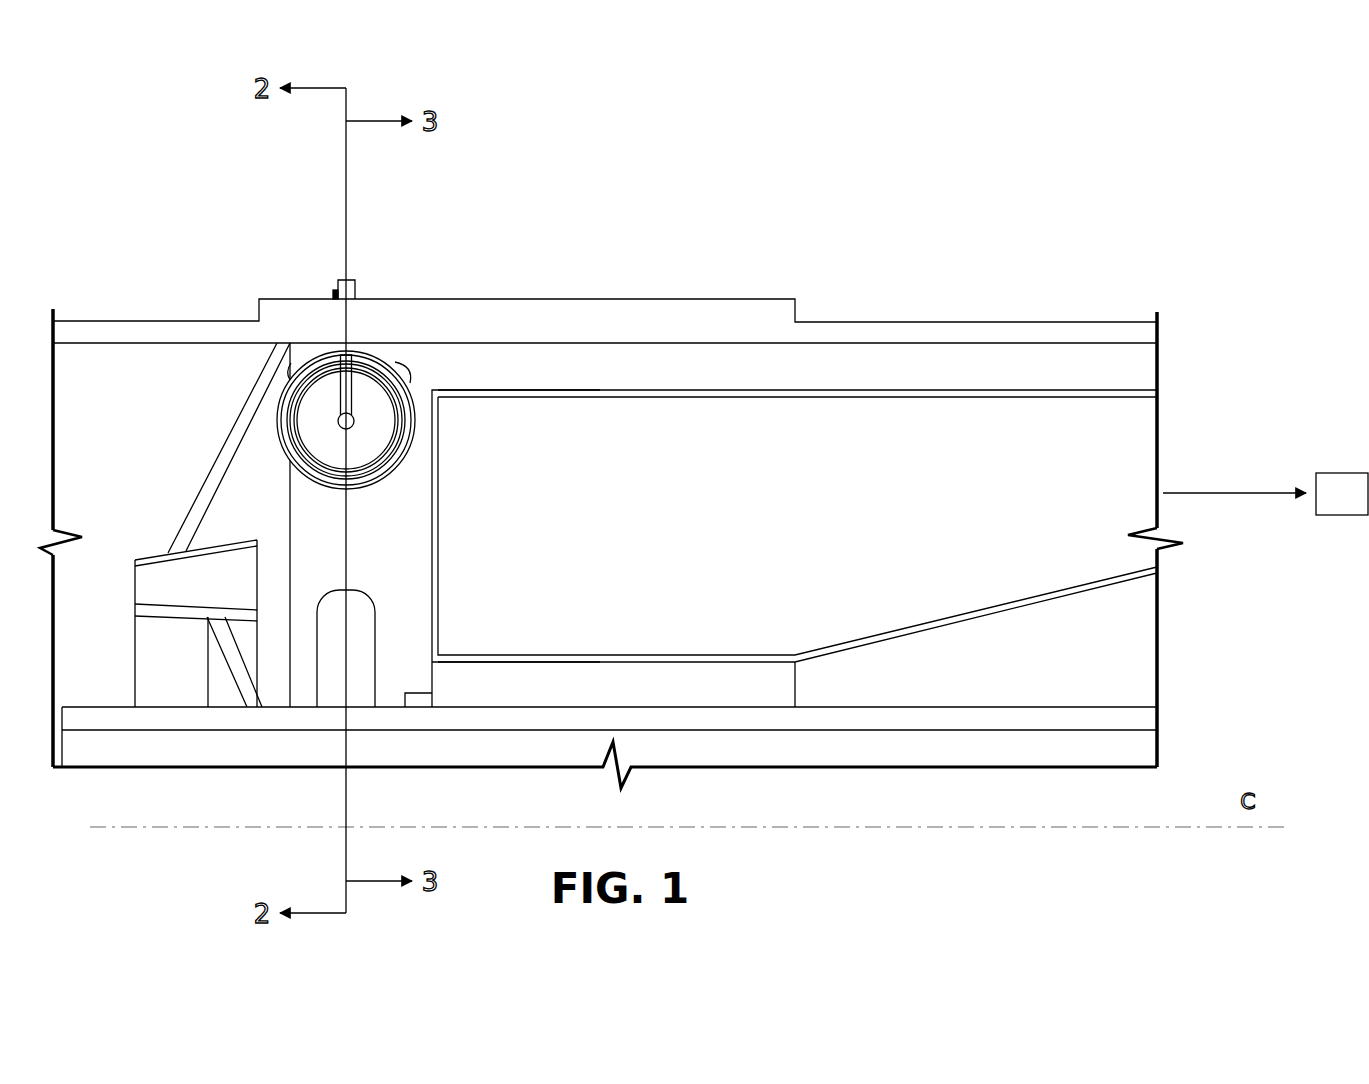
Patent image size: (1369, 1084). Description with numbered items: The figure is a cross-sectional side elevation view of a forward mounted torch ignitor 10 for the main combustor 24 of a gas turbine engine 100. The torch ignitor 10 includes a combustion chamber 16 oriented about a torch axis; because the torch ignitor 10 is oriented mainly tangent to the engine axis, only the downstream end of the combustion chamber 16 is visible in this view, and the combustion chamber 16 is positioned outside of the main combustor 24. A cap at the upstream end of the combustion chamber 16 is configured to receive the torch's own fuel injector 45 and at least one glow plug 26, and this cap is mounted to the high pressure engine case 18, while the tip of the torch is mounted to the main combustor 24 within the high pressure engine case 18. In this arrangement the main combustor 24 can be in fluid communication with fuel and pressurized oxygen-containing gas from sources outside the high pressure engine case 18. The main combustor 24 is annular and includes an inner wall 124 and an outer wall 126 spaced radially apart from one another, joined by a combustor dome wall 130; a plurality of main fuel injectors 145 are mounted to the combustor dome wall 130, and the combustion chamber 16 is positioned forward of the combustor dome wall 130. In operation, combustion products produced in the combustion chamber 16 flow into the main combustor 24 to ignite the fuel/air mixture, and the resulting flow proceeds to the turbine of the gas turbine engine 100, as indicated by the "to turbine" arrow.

The torch ignitor 10 is at (364, 418).
The combustion chamber 16 is at (309, 355).
The high pressure engine case 18 is at (718, 319).
The main combustor 24 is at (605, 544).
The glow plug 26 is at (338, 279).
The fuel injector 45 is at (333, 292).
The gas turbine engine 100 is at (1327, 508).
The inner wall 124 is at (535, 664).
The outer wall 126 is at (512, 389).
The combustor dome wall 130 is at (431, 561).
The main fuel injectors 145 is at (340, 594).